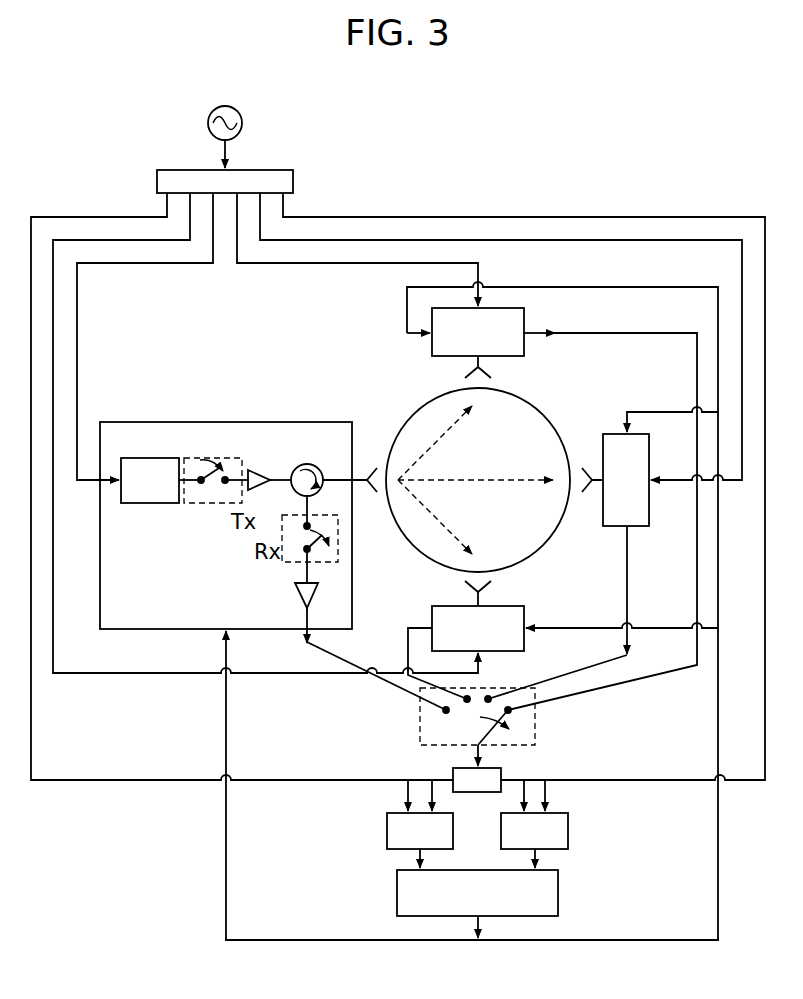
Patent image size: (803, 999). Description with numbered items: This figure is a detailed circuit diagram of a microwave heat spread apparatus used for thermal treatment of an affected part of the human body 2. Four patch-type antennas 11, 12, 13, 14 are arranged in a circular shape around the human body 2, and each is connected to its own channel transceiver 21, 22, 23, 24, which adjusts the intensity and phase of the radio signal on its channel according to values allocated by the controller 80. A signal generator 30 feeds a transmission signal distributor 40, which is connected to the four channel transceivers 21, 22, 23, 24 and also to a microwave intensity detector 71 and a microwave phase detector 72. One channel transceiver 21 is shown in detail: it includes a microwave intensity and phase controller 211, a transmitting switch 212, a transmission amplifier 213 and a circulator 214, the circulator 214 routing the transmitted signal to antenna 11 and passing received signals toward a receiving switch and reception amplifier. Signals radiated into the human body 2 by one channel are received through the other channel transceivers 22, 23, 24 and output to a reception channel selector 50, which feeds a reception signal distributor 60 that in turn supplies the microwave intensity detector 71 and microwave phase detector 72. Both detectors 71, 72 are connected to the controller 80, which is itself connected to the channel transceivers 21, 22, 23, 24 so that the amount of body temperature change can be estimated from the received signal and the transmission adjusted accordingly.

The human body 2 is at (542, 452).
The antenna 11 is at (368, 469).
The antenna 12 is at (492, 592).
The antenna 13 is at (590, 489).
The antenna 14 is at (421, 408).
The channel transceiver 21 is at (226, 422).
The channel transceiver 22 is at (431, 606).
The channel transceiver 23 is at (643, 527).
The channel transceiver 24 is at (524, 318).
The signal generator 30 is at (244, 123).
The transmission signal distributor 40 is at (293, 181).
The reception channel selector 50 is at (420, 718).
The reception signal distributor 60 is at (503, 770).
The microwave intensity detector 71 is at (387, 831).
The microwave phase detector 72 is at (568, 831).
The controller 80 is at (397, 893).
The microwave intensity and phase controller 211 is at (150, 503).
The transmitting switch 212 is at (213, 503).
The transmission amplifier 213 is at (266, 469).
The circulator 214 is at (310, 464).